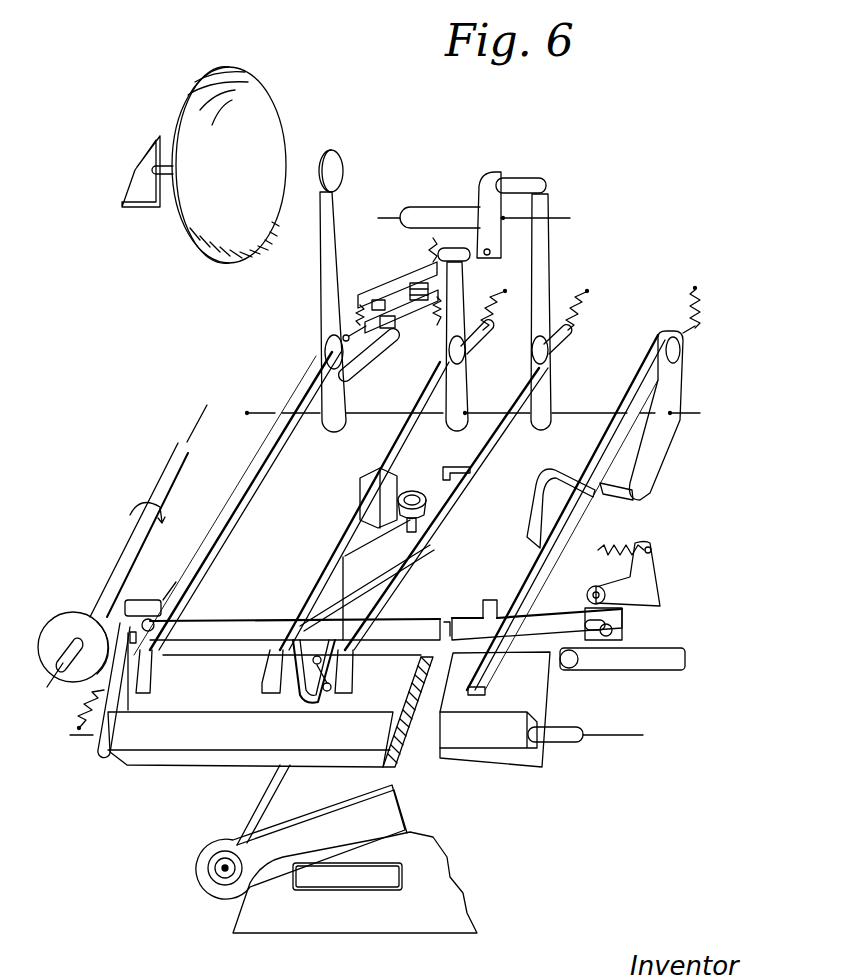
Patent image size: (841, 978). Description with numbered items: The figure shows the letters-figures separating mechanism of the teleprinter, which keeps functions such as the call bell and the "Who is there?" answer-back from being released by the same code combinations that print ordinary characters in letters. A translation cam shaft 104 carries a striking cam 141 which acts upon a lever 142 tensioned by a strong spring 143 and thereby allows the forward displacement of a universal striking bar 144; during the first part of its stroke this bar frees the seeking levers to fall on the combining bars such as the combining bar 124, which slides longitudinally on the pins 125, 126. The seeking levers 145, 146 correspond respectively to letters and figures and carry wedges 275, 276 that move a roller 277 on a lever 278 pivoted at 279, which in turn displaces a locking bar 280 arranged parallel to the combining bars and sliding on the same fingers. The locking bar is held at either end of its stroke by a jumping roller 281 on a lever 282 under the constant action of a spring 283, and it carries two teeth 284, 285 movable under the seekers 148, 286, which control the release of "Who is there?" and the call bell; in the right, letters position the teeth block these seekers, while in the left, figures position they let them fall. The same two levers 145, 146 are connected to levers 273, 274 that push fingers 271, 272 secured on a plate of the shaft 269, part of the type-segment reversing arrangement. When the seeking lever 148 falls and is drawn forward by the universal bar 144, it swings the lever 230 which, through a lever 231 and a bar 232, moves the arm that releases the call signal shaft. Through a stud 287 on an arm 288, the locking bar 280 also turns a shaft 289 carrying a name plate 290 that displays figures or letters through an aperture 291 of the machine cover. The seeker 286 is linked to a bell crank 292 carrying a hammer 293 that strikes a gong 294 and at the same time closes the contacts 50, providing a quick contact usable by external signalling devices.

The contacts 50 is at (407, 287).
The translation cam shaft 104 is at (160, 480).
The combining bar 124 is at (220, 626).
The pin 125 is at (146, 600).
The pin 126 is at (613, 633).
The striking cam 141 is at (66, 612).
The lever 142 is at (120, 701).
The spring 143 is at (82, 706).
The universal striking bar 144 is at (543, 688).
The seeking lever 145 is at (393, 437).
The seeking lever 146 is at (493, 433).
The seeking lever 148 is at (640, 388).
The lever 230 is at (655, 437).
The lever 231 is at (547, 523).
The bar 232 is at (643, 666).
The shaft 269 is at (438, 209).
The finger 271 is at (468, 256).
The finger 272 is at (523, 185).
The lever 273 is at (458, 318).
The lever 274 is at (548, 263).
The wedge 275 is at (378, 482).
The wedge 276 is at (462, 474).
The roller 277 is at (427, 514).
The lever 278 is at (380, 593).
The pivot 279 is at (370, 548).
The locking bar 280 is at (460, 620).
The jumping roller 281 is at (596, 588).
The lever 282 is at (633, 598).
The spring 283 is at (626, 547).
The tooth 284 is at (490, 600).
The tooth 285 is at (176, 582).
The seeker 286 is at (257, 470).
The stud 287 is at (267, 671).
The arm 288 is at (297, 703).
The shaft 289 is at (263, 797).
The name plate 290 is at (233, 840).
The aperture 291 is at (300, 925).
The bell crank 292 is at (330, 289).
The hammer 293 is at (337, 166).
The gong 294 is at (268, 112).